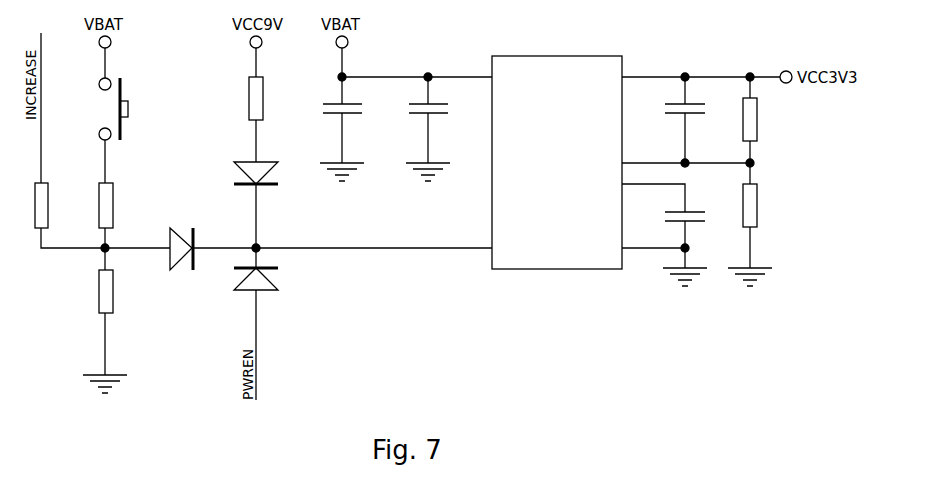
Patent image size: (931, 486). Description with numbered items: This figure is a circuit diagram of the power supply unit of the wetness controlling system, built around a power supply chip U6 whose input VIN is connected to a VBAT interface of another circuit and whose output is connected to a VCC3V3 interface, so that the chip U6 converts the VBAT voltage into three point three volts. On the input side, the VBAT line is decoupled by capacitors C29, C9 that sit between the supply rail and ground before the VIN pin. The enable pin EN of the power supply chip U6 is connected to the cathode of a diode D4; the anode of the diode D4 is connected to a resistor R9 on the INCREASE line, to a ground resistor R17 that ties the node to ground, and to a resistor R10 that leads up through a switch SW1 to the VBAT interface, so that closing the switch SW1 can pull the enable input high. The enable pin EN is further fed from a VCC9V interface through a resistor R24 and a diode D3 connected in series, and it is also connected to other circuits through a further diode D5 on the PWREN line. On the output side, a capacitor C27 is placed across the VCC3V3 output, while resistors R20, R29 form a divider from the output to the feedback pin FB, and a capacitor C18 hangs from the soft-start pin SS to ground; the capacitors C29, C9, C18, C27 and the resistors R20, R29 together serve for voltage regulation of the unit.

The resistor R9 is at (70, 215).
The resistor R10 is at (123, 226).
The resistor R17 is at (115, 331).
The resistor R24 is at (273, 119).
The resistor R20 is at (767, 128).
The resistor R29 is at (759, 234).
The capacitor C29 is at (358, 138).
The capacitor C9 is at (439, 127).
The capacitor C27 is at (702, 120).
The capacitor C18 is at (701, 245).
The diode D3 is at (225, 206).
The diode D4 is at (181, 240).
The diode D5 is at (269, 334).
The switch SW1 is at (131, 109).
The power supply chip U6 is at (557, 153).